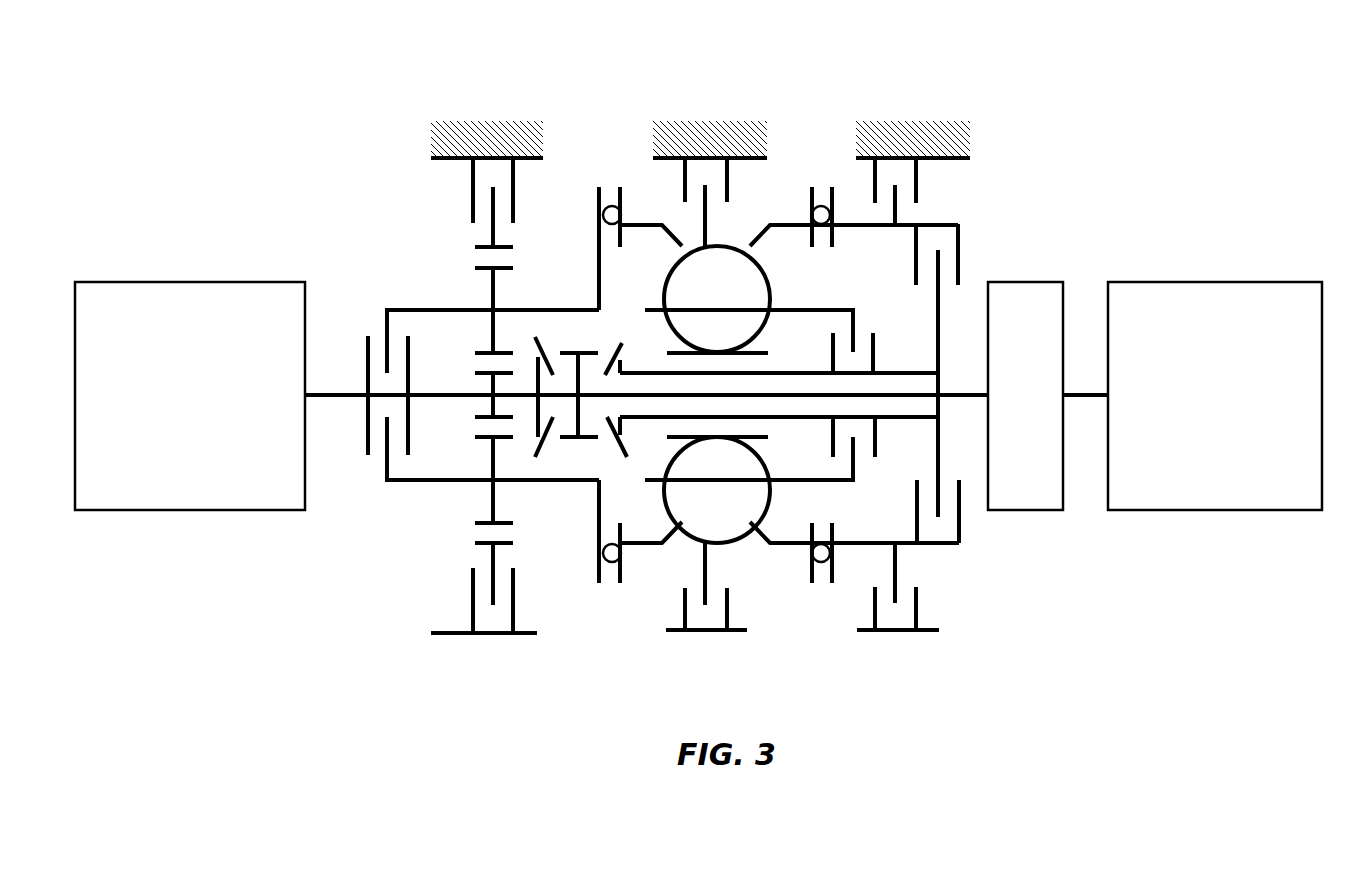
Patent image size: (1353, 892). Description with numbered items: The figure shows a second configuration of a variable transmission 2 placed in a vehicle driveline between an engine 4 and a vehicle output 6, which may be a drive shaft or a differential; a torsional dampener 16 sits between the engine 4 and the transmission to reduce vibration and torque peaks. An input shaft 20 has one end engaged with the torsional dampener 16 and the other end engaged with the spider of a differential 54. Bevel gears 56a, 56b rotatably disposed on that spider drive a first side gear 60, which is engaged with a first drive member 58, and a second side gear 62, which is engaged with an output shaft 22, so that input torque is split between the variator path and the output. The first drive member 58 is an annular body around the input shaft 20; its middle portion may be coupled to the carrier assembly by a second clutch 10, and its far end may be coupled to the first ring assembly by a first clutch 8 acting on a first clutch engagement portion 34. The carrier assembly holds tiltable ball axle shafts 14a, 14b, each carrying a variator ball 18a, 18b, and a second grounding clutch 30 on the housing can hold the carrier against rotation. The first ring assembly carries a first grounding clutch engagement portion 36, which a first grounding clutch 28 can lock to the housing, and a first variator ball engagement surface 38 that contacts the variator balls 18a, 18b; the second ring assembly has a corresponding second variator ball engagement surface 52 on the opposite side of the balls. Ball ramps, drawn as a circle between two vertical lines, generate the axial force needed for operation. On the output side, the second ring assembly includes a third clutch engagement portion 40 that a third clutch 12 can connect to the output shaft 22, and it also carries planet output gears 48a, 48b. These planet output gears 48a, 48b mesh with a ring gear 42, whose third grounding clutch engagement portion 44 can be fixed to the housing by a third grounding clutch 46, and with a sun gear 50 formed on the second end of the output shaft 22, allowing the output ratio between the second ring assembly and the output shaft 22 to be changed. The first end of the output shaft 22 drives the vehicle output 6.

The variable transmission 2 is at (725, 88).
The engine 4 is at (1249, 282).
The vehicle output 6 is at (192, 282).
The first clutch 8 is at (965, 231).
The second clutch 10 is at (892, 337).
The third clutch 12 is at (385, 284).
The ball axle shaft 14a is at (697, 308).
The ball axle shaft 14b is at (737, 482).
The torsional dampener 16 is at (1043, 282).
The variator ball 18a is at (716, 246).
The variator ball 18b is at (733, 545).
The input shaft 20 is at (971, 400).
The output shaft 22 is at (333, 393).
The first grounding clutch 28 is at (950, 105).
The second grounding clutch 30 is at (753, 111).
The first clutch engagement portion 34 is at (960, 262).
The first grounding clutch engagement portion 36 is at (898, 217).
The first variator ball engagement surface 38 is at (758, 230).
The third clutch engagement portion 40 is at (387, 325).
The ring gear 42 is at (473, 532).
The third grounding clutch engagement portion 44 is at (492, 553).
The third grounding clutch 46 is at (495, 106).
The planet output gear 48a is at (493, 294).
The planet output gear 48b is at (492, 494).
The sun gear 50 is at (488, 405).
The second variator ball engagement surface 52 is at (678, 232).
The differential 54 is at (580, 465).
The bevel gear 56a is at (548, 334).
The bevel gear 56b is at (620, 345).
The first drive member 58 is at (797, 373).
The first side gear 60 is at (622, 365).
The second side gear 62 is at (533, 370).